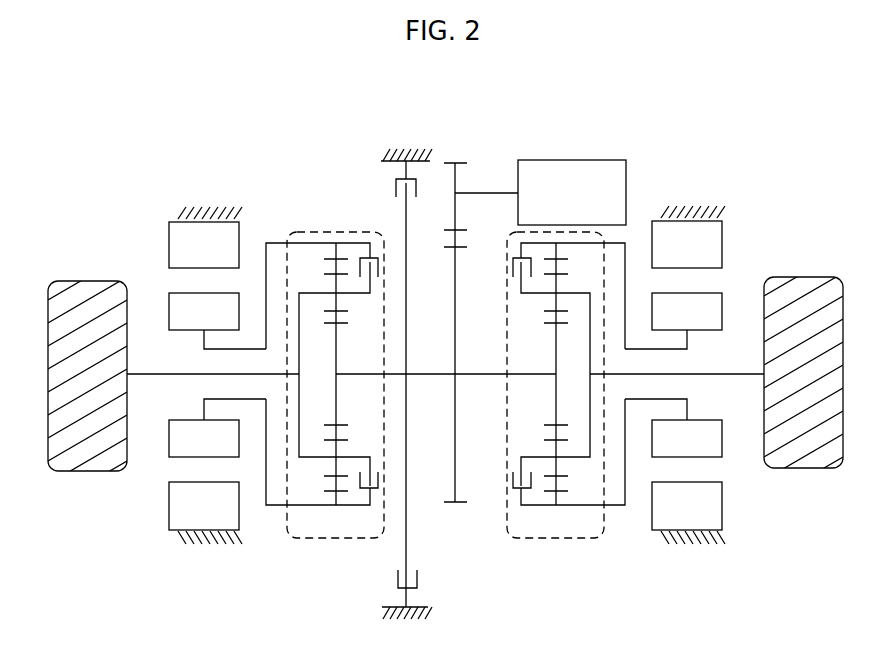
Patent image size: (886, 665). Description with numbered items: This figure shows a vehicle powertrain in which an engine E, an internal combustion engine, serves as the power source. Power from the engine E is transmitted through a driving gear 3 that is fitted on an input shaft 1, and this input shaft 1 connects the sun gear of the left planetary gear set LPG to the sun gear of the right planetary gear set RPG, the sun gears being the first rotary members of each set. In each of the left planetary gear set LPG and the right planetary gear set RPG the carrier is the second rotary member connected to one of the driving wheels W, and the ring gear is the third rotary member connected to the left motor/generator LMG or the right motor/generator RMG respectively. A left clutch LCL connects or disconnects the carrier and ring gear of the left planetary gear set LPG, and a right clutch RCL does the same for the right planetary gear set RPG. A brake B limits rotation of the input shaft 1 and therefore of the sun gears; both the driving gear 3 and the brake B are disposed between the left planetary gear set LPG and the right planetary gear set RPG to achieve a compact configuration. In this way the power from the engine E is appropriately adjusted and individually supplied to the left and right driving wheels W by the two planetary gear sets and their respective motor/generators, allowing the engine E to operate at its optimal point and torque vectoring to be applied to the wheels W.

The driving wheels W is at (88, 281).
The input shaft 1 is at (468, 372).
The driving gear 3 is at (466, 504).
The engine E is at (573, 160).
The brake B is at (418, 580).
The left motor/generator LMG is at (205, 195).
The right motor/generator RMG is at (690, 192).
The left clutch LCL is at (371, 255).
The right clutch RCL is at (519, 255).
The left planetary gear set LPG is at (334, 540).
The right planetary gear set RPG is at (567, 540).